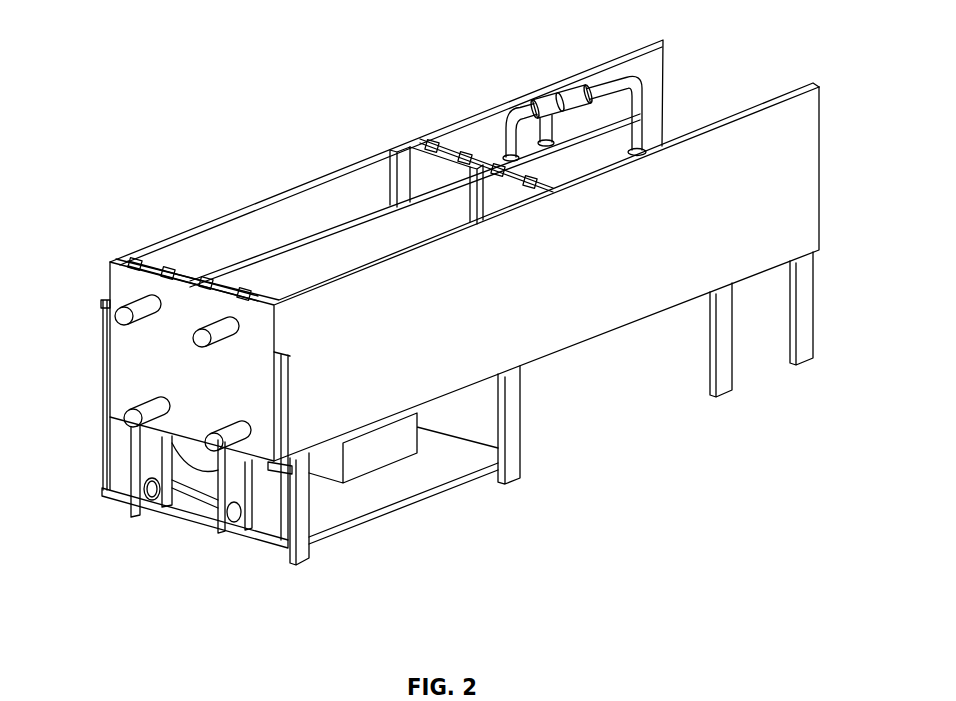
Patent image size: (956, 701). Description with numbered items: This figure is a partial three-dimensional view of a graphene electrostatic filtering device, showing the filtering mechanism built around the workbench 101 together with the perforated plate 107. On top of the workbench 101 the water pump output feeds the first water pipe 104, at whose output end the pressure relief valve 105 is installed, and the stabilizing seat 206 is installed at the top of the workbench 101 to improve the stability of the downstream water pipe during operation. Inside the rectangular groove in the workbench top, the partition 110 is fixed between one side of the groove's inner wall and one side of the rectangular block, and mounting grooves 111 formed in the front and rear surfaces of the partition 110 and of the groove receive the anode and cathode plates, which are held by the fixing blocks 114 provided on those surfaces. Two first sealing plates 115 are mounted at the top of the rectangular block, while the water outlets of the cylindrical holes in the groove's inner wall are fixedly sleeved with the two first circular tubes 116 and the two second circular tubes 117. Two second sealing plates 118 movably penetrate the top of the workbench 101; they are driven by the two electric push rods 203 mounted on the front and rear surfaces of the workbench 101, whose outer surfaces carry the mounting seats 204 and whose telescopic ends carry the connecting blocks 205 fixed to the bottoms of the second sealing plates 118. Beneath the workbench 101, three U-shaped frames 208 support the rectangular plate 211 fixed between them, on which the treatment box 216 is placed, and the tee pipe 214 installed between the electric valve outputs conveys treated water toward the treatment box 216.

The workbench 101 is at (803, 150).
The first water pipe 104 is at (638, 80).
The pressure relief valve 105 is at (577, 77).
The stabilizing seat 206 is at (543, 100).
The perforated plate 107 is at (440, 137).
The partition 110 is at (247, 263).
The mounting grooves 111 is at (318, 178).
The support post 114 is at (390, 173).
The first sealing plates 115 is at (513, 200).
The first circular tubes 116 is at (140, 308).
The second circular tubes 117 is at (129, 417).
The second sealing plates 118 is at (147, 443).
The electric push rods 203 is at (103, 350).
The mounting seats 204 is at (278, 467).
The connecting blocks 205 is at (232, 533).
The tee pipe 214 is at (113, 497).
The U-shaped frames 208 is at (723, 335).
The rectangular plate 211 is at (453, 467).
The treatment box 216 is at (362, 463).